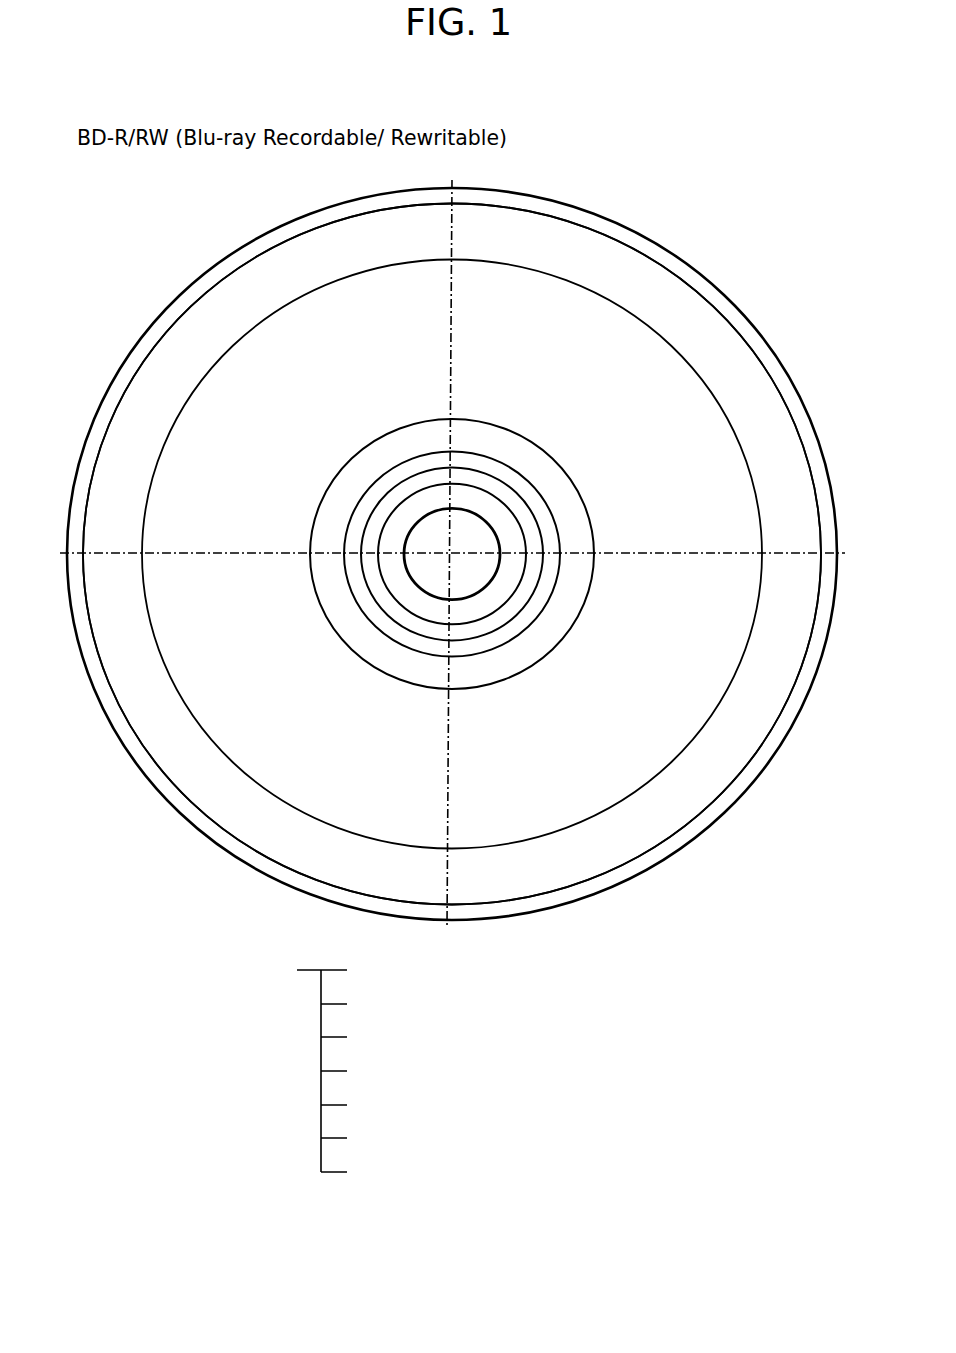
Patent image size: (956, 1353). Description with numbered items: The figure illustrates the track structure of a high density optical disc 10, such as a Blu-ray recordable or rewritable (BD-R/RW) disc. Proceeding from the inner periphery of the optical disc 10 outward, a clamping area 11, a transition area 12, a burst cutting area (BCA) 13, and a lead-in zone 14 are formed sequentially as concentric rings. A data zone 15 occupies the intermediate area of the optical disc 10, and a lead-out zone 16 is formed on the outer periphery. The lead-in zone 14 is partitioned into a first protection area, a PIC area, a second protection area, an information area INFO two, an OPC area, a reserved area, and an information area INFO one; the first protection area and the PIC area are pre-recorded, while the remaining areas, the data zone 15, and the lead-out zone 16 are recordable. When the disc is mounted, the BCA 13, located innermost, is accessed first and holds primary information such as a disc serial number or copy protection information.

The high density optical disc 10 is at (743, 220).
The clamping area 11 is at (412, 510).
The transition area 12 is at (473, 477).
The burst cutting area (BCA) 13 is at (537, 504).
The lead-in zone 14 is at (401, 670).
The data zone 15 is at (452, 554).
The lead-out zone 16 is at (589, 850).